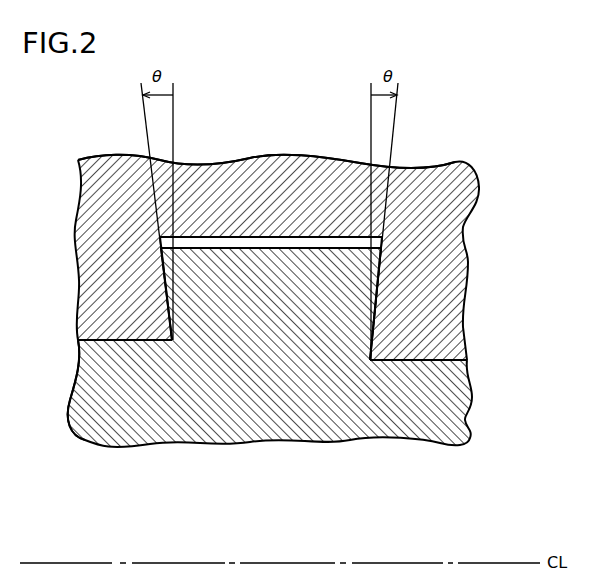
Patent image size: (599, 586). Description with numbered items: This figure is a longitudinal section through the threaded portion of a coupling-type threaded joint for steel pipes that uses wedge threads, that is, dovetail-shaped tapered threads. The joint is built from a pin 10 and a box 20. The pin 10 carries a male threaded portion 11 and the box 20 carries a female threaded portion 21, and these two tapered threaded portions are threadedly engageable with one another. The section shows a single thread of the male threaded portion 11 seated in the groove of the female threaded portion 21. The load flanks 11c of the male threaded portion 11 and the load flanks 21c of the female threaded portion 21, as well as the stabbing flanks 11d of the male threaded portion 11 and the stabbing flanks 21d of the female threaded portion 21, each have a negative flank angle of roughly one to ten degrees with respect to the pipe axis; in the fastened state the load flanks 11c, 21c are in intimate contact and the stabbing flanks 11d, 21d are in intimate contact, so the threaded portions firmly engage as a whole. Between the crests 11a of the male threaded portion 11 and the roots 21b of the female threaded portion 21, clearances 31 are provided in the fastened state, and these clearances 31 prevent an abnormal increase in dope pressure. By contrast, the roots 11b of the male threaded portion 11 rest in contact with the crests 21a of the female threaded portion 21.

The pin 10 is at (310, 384).
The male threaded portion 11 is at (452, 447).
The crests of the male threaded portion 11a is at (267, 250).
The roots of the male threaded portion 11b is at (127, 341).
The load flanks of the male threaded portion 11c is at (171, 285).
The stabbing flanks of the male threaded portion 11d is at (370, 287).
The box 20 is at (290, 220).
The female threaded portion 21 is at (443, 166).
The crests of the female threaded portion 21a is at (110, 338).
The roots of the female threaded portion 21b is at (265, 236).
The load flanks of the female threaded portion 21c is at (163, 267).
The stabbing flanks of the female threaded portion 21d is at (378, 271).
The clearances 31 is at (318, 245).